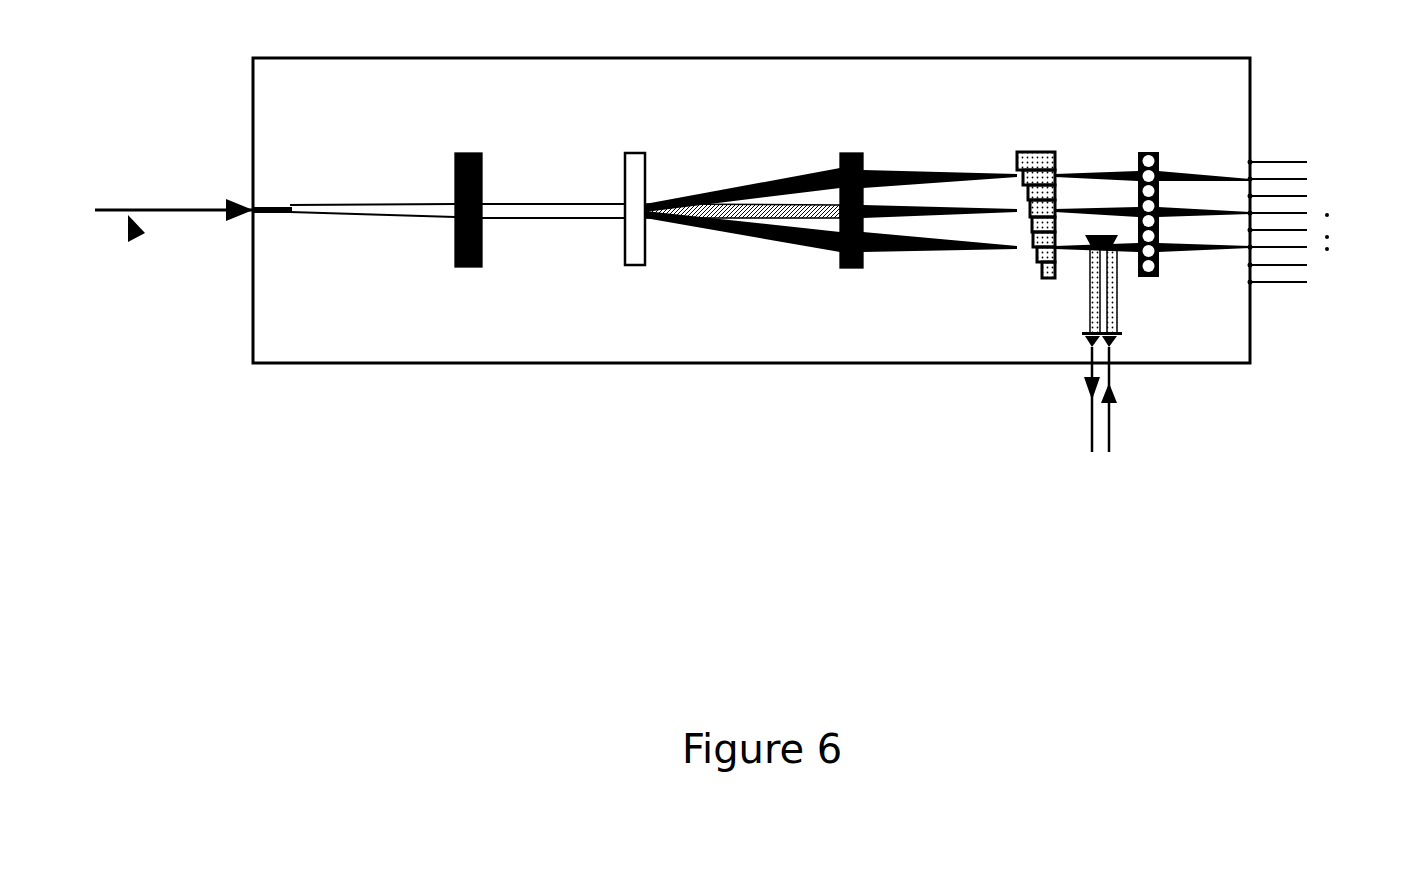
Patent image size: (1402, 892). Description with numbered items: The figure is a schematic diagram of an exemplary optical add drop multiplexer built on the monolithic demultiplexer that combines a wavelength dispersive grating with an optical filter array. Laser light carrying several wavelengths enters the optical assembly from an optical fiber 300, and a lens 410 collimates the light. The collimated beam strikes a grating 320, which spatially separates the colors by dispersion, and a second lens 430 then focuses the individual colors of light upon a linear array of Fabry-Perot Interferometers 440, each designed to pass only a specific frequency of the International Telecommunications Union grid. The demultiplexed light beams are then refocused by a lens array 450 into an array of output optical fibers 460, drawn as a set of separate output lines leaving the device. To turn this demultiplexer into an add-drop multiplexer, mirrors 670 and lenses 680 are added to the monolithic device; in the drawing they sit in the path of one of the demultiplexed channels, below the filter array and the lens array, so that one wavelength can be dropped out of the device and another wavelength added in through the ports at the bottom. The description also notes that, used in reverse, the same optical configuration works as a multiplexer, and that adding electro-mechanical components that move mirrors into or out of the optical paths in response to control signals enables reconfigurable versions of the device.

The optical fiber 300 is at (174, 242).
The lens 410 is at (455, 186).
The grating 320 is at (628, 190).
The lens 430 is at (843, 191).
The linear array of Fabry-Perot Interferometers 440 is at (1033, 192).
The lens array 450 is at (1141, 191).
The array of output optical fibers 460 is at (1284, 316).
The mirrors 670 is at (1078, 271).
The lenses 680 is at (1070, 350).